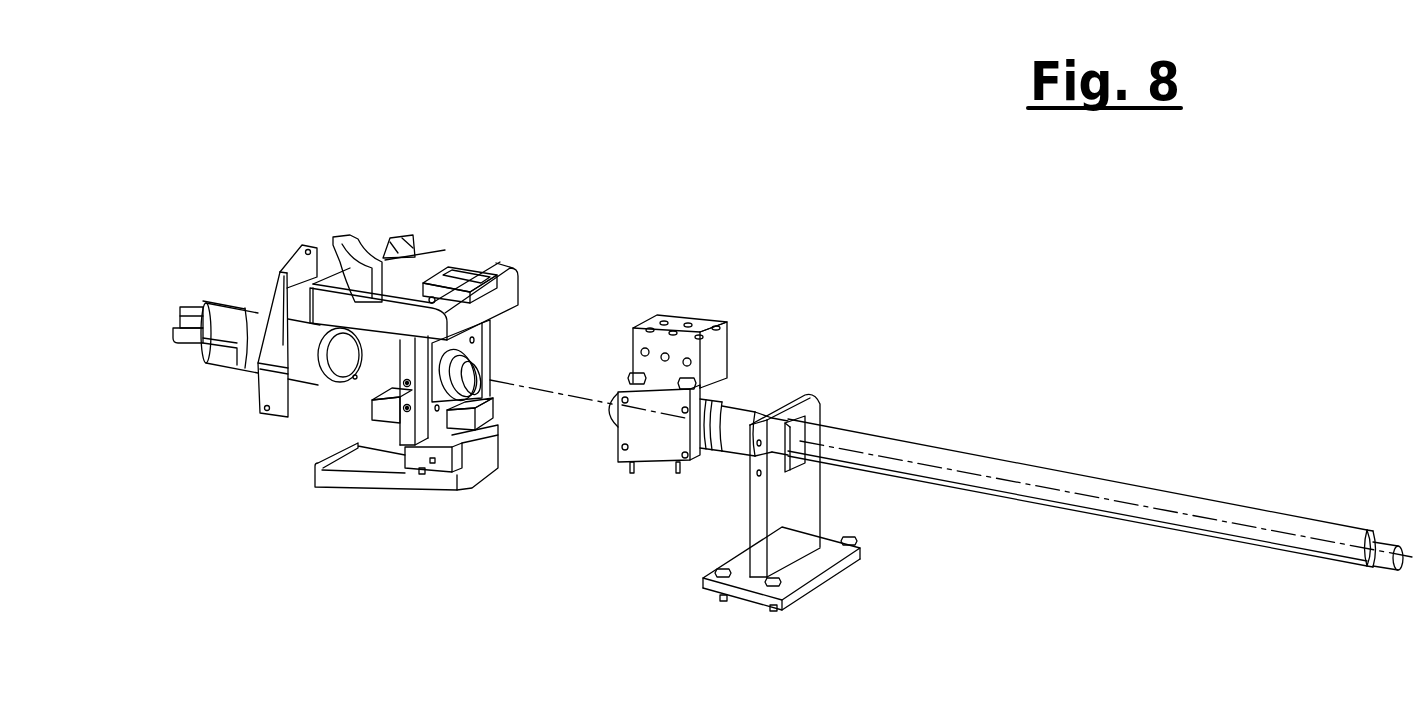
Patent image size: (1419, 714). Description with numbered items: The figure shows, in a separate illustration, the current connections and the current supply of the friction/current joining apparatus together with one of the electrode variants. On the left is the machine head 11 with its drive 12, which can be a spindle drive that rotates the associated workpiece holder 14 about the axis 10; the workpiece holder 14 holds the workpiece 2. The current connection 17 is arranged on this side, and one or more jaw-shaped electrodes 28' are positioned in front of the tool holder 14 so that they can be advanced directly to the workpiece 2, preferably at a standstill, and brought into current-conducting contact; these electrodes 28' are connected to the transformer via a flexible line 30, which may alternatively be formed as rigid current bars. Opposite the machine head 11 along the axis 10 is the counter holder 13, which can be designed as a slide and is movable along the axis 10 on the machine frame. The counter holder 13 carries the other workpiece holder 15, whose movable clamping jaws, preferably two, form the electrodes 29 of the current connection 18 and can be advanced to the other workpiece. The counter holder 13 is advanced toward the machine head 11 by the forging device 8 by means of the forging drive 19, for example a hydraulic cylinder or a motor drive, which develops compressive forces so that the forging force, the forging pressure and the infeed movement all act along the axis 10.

The machine head 11 is at (222, 266).
The drive 12 is at (222, 266).
The line 30 is at (335, 307).
The workpiece 2 is at (476, 371).
The workpiece holder 14 is at (382, 418).
The electrode 28' is at (415, 523).
The current connection 17 is at (463, 432).
The electrode 29 is at (658, 317).
The workpiece holder 15 is at (684, 320).
The current connection 18 is at (702, 347).
The counter holder 13 is at (666, 518).
The forging device 8 is at (1095, 457).
The axis 10 is at (951, 468).
The forging drive 19 is at (1097, 500).